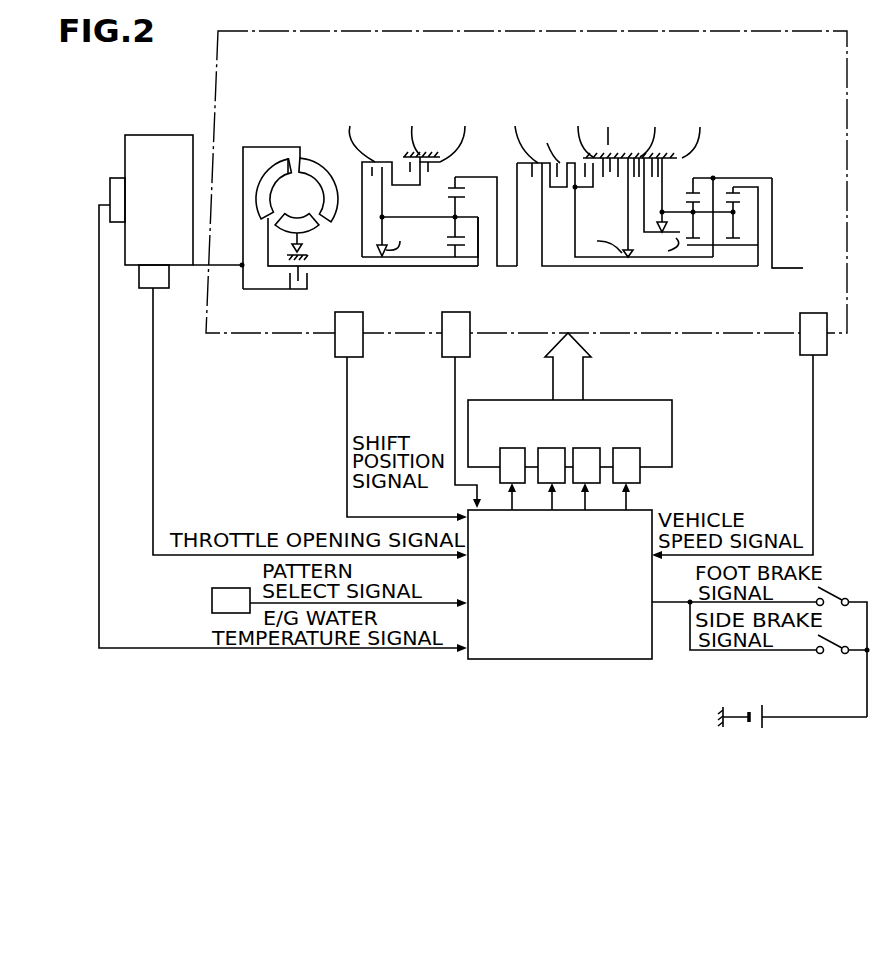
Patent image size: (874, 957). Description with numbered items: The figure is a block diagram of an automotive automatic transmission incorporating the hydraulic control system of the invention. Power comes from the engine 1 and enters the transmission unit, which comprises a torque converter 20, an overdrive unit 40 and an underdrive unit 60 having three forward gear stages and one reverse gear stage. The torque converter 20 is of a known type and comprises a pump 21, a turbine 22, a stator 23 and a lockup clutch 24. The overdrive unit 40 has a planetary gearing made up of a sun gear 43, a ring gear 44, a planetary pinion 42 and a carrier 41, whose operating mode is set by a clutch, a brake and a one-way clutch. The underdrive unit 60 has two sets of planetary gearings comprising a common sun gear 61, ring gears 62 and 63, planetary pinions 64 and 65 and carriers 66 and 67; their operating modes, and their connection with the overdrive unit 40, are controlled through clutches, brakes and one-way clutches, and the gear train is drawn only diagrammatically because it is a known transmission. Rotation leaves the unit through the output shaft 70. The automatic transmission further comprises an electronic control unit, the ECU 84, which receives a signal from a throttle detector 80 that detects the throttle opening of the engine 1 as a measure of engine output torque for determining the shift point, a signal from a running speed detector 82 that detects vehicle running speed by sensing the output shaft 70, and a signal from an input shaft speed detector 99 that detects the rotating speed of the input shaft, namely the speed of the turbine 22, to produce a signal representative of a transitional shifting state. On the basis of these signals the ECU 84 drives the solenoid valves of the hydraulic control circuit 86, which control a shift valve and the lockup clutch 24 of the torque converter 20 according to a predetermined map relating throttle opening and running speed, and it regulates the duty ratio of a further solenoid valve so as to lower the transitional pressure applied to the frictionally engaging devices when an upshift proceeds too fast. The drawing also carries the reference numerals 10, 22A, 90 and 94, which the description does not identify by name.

The engine 1 is at (162, 148).
The automatic transmission 10 is at (221, 268).
The torque converter 20 is at (360, 191).
The pump 21 is at (314, 172).
The turbine 22 is at (279, 170).
The turbine output shaft 22A is at (335, 268).
The stator 23 is at (312, 232).
The lockup clutch 24 is at (270, 290).
The overdrive unit 40 is at (427, 160).
The carrier 41 is at (467, 216).
The planetary pinion 42 is at (446, 212).
The sun gear 43 is at (447, 247).
The ring gear 44 is at (449, 187).
The underdrive unit 60 is at (655, 162).
The common sun gear 61 is at (722, 248).
The ring gear 62 is at (740, 188).
The ring gear 63 is at (718, 178).
The planetary pinion 64 is at (760, 204).
The planetary pinion 65 is at (713, 226).
The carrier 66 is at (740, 224).
The carrier 67 is at (687, 180).
The output shaft 70 is at (770, 270).
The throttle detector 80 is at (143, 275).
The running speed detector 82 is at (800, 342).
The electronic control unit (ECU) 84 is at (560, 660).
The hydraulic control circuit 86 is at (672, 433).
The shift position sensor 90 is at (363, 342).
The engine water temperature sensor 94 is at (118, 182).
The input shaft speed detector 99 is at (470, 347).